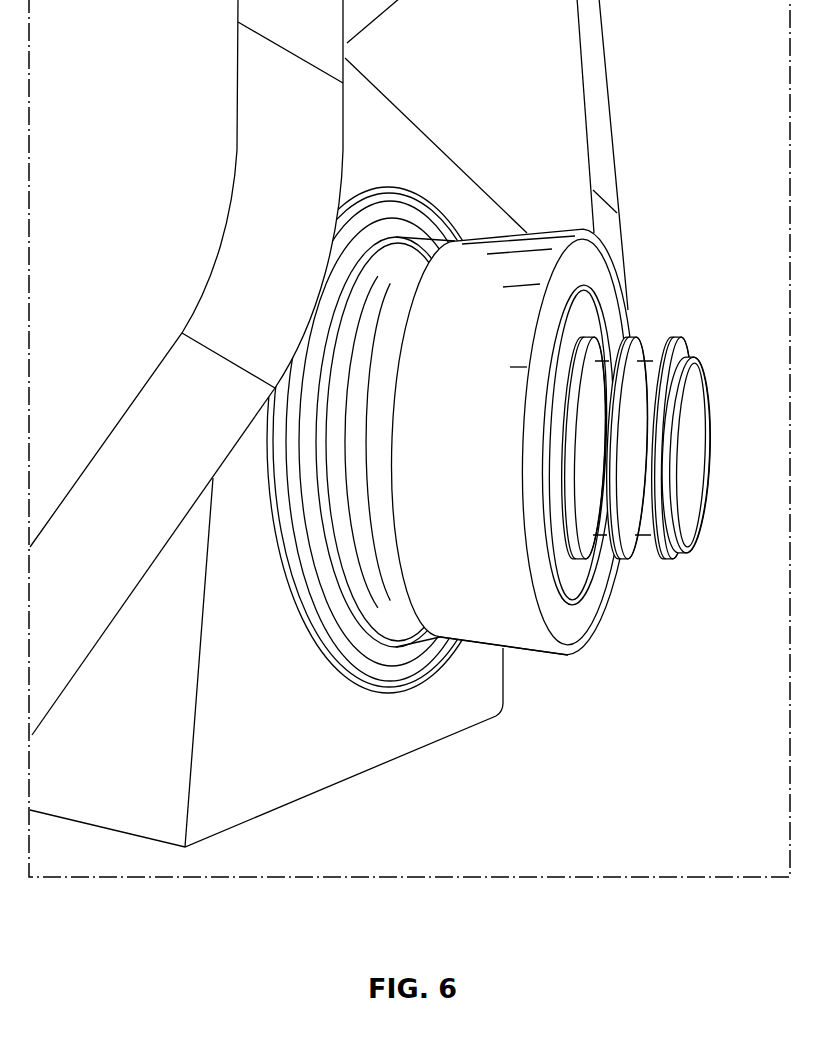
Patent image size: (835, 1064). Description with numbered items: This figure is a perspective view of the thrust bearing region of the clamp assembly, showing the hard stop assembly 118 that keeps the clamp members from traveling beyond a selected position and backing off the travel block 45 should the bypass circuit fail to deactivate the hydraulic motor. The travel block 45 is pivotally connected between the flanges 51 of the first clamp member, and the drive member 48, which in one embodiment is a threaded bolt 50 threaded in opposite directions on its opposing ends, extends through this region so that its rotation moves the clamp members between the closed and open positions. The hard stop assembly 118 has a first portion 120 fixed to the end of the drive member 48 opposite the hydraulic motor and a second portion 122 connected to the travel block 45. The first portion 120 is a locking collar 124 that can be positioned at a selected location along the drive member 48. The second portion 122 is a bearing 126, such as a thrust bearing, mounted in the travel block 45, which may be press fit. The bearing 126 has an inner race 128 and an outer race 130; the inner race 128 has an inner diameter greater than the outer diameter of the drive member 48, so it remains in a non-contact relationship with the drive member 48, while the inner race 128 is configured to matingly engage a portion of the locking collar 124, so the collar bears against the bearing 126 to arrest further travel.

The travel block 45 is at (358, 773).
The drive member 48 is at (707, 377).
The threaded bolt 50 is at (710, 500).
The flange 51 is at (235, 155).
The hard stop assembly 118 is at (528, 656).
The first portion 120 is at (595, 260).
The second portion 122 is at (330, 610).
The locking collar 124 is at (590, 632).
The bearing 126 is at (322, 556).
The inner race 128 is at (422, 247).
The outer race 130 is at (400, 668).